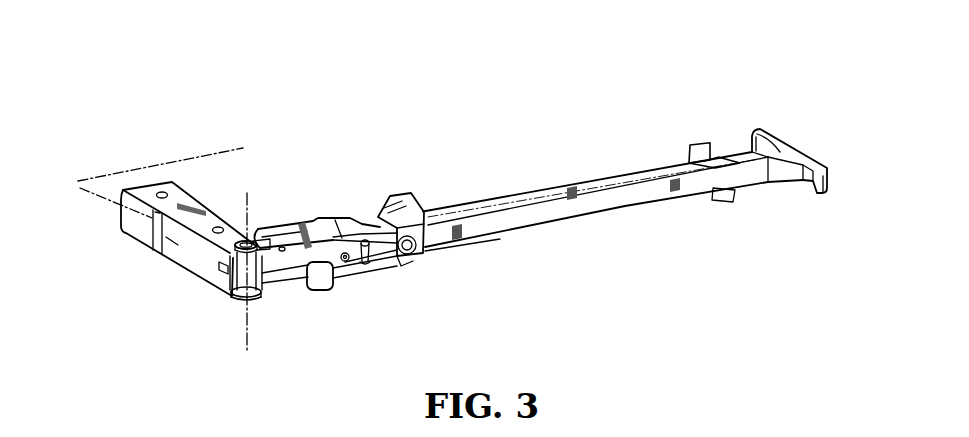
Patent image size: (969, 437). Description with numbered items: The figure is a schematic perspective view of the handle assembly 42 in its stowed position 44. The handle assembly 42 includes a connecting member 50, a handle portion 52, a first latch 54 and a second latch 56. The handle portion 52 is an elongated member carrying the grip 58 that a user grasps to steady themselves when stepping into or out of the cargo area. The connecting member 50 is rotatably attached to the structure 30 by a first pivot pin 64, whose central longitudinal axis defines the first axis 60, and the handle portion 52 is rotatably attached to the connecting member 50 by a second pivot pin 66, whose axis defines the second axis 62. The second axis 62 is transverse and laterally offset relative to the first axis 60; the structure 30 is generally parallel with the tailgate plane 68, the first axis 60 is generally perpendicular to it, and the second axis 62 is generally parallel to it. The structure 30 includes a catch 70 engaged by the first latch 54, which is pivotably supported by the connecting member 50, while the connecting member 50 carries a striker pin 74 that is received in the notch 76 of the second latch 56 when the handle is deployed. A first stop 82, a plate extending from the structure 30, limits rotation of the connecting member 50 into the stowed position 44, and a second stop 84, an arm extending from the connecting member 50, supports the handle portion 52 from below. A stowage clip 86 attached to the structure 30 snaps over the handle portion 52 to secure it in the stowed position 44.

The structure 30 is at (185, 200).
The handle assembly 42 is at (494, 81).
The stowed position 44 is at (598, 181).
The connecting member 50 is at (317, 233).
The handle portion 52 is at (625, 207).
The first latch 54 is at (320, 291).
The second latch 56 is at (390, 197).
The grip 58 is at (780, 150).
The first axis 60 is at (247, 320).
The second axis 62 is at (400, 272).
The first pivot pin 64 is at (217, 240).
The second pivot pin 66 is at (373, 259).
The tailgate plane 68 is at (104, 172).
The catch 70 is at (237, 300).
The striker pin 74 is at (346, 262).
The notch 76 is at (364, 263).
The first stop 82 is at (267, 237).
The second stop 84 is at (401, 266).
The stowage clip 86 is at (703, 150).